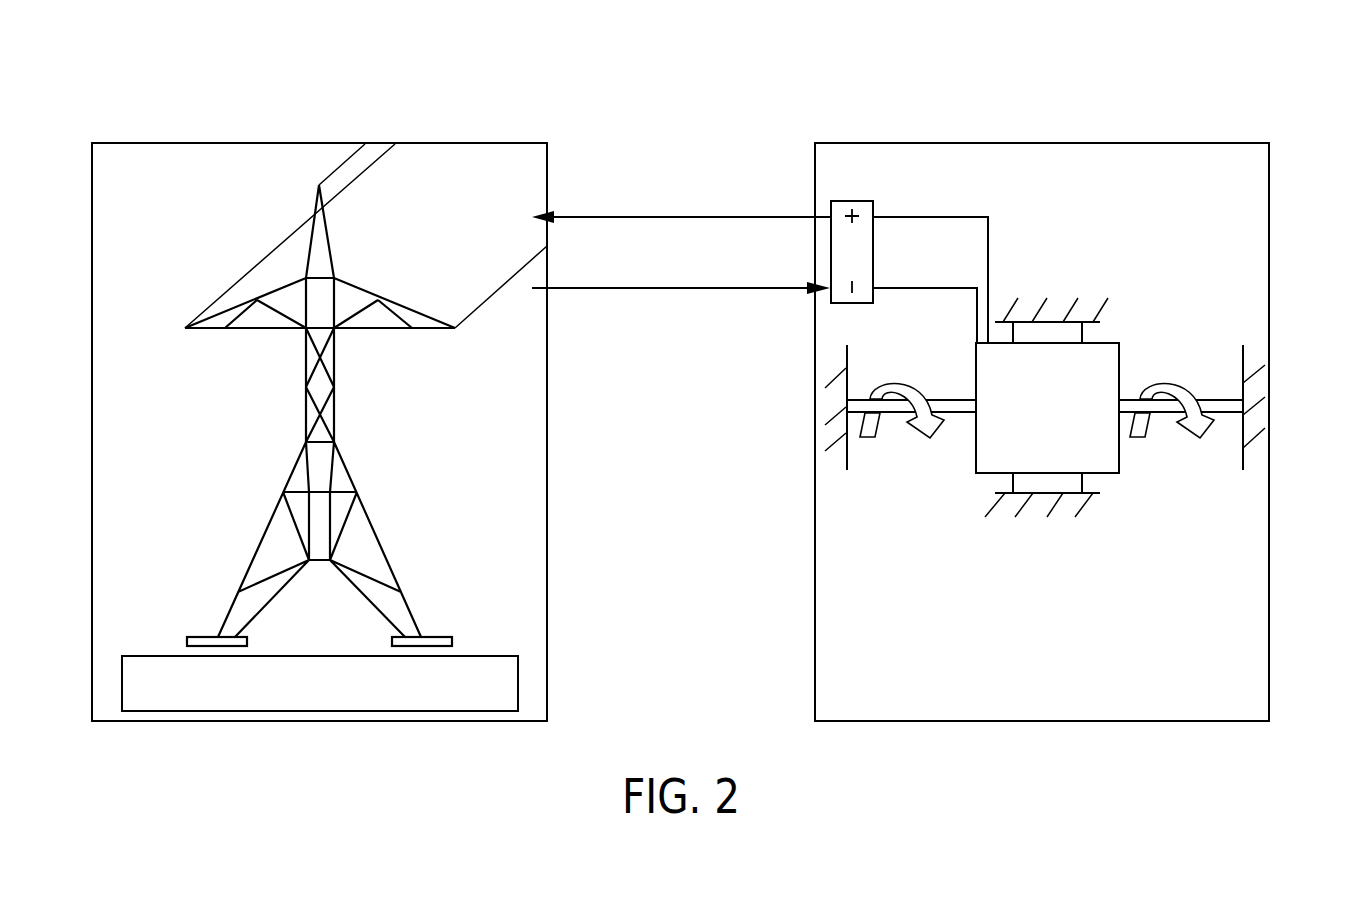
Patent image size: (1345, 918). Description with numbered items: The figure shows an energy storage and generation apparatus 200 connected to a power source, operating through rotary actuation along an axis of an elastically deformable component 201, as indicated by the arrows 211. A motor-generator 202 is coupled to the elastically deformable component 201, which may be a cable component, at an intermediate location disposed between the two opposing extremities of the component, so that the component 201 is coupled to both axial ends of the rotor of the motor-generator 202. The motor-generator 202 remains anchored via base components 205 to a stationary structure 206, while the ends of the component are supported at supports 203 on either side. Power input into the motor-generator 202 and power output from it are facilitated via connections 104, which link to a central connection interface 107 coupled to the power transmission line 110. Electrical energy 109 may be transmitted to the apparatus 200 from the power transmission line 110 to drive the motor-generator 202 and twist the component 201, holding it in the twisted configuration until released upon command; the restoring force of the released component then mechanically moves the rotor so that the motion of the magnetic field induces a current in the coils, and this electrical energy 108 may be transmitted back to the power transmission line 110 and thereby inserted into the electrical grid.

The energy storage and generation apparatus 200 is at (1188, 56).
The power transmission line 110 is at (500, 143).
The electrical energy 108 is at (668, 216).
The electrical energy 109 is at (628, 289).
The central connection interface 107 is at (862, 201).
The connections 104 is at (895, 216).
The motor-generator 202 is at (1113, 343).
The base components 205 is at (1057, 321).
The stationary structure 206 is at (1027, 321).
The support wall 203 is at (1243, 428).
The elastically deformable component 201 is at (1218, 399).
The arrows 211 is at (918, 396).